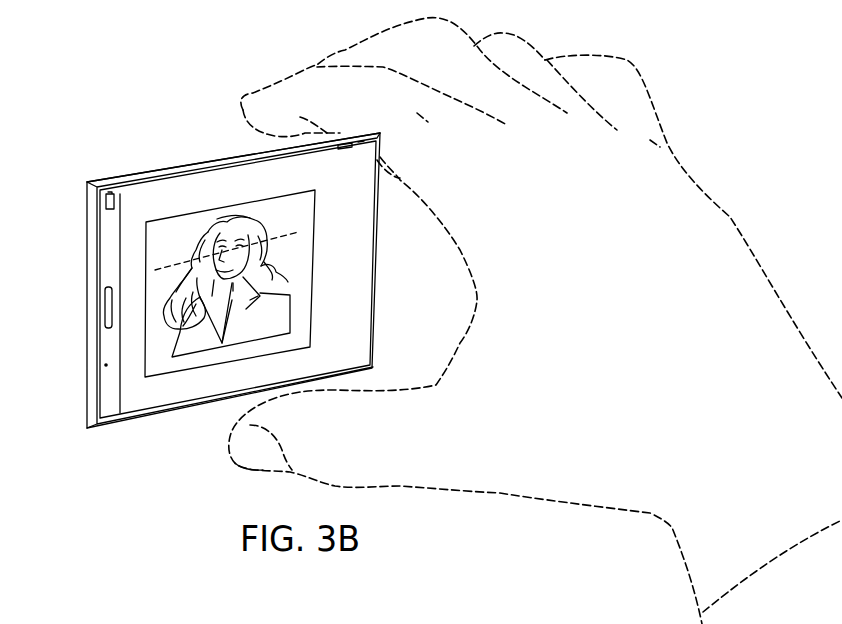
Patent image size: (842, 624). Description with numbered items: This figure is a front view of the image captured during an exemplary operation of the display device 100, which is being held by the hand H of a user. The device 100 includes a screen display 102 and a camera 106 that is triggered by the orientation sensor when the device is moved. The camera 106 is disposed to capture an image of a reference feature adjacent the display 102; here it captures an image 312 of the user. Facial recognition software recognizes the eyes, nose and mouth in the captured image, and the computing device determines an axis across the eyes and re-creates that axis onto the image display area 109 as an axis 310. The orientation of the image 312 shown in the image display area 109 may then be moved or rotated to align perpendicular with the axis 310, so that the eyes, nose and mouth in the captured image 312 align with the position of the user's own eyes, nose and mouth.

The display device 100 is at (124, 154).
The screen display 102 is at (195, 167).
The camera 106 is at (106, 308).
The image display area 109 is at (303, 312).
The axis 310 is at (298, 232).
The image 312 is at (254, 217).
The hand H is at (722, 204).